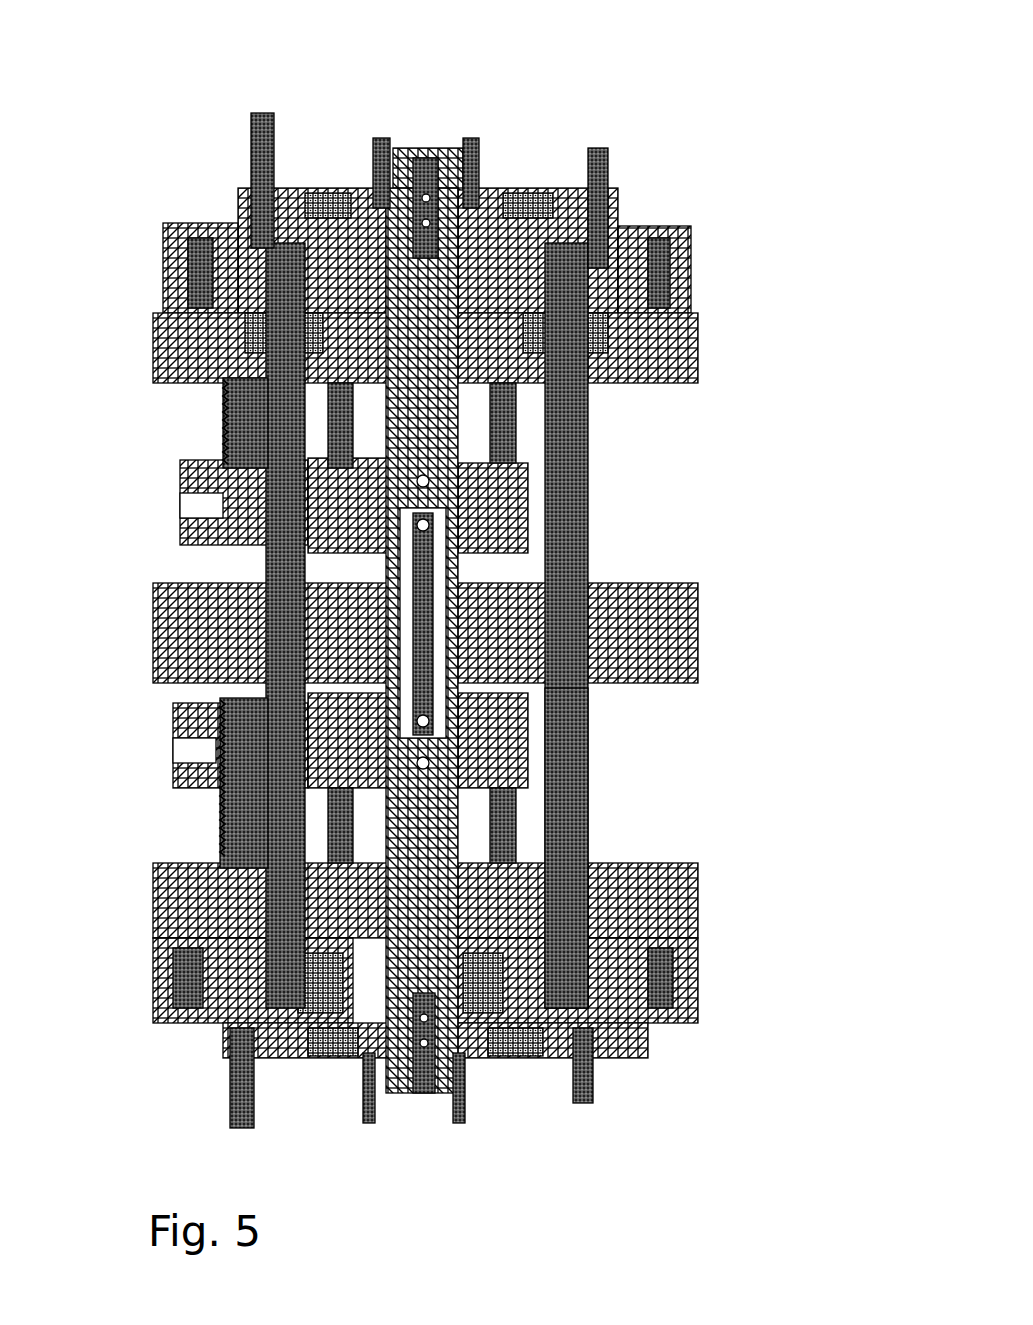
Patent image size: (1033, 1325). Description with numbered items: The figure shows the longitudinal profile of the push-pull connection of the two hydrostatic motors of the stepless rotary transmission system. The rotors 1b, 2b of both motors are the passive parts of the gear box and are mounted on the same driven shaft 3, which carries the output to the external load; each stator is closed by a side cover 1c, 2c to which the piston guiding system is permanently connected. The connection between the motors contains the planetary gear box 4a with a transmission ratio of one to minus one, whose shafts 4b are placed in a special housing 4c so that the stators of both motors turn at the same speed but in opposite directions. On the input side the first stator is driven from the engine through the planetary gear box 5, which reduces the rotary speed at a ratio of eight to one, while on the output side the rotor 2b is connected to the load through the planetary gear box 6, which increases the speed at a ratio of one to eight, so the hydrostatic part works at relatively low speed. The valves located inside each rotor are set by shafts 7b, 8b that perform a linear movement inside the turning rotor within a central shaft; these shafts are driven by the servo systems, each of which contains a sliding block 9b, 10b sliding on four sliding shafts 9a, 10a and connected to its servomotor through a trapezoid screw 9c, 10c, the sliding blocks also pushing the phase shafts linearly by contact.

The rotor 1b is at (357, 1125).
The side cover 1c is at (618, 1020).
The rotor 2b is at (375, 118).
The side cover 2c is at (612, 216).
The driven shaft 3 is at (565, 565).
The planetary gear box 4a is at (672, 672).
The shafts 4b is at (578, 746).
The housing 4c is at (690, 375).
The planetary gear box 5 is at (655, 962).
The planetary gear box 6 is at (682, 250).
The shaft 7b is at (458, 1053).
The shaft 8b is at (468, 197).
The sliding shafts 9a is at (160, 960).
The sliding block 9b is at (165, 790).
The trapezoid screw 9c is at (188, 692).
The sliding shafts 10a is at (327, 393).
The sliding block 10b is at (172, 517).
The trapezoid screw 10c is at (222, 405).